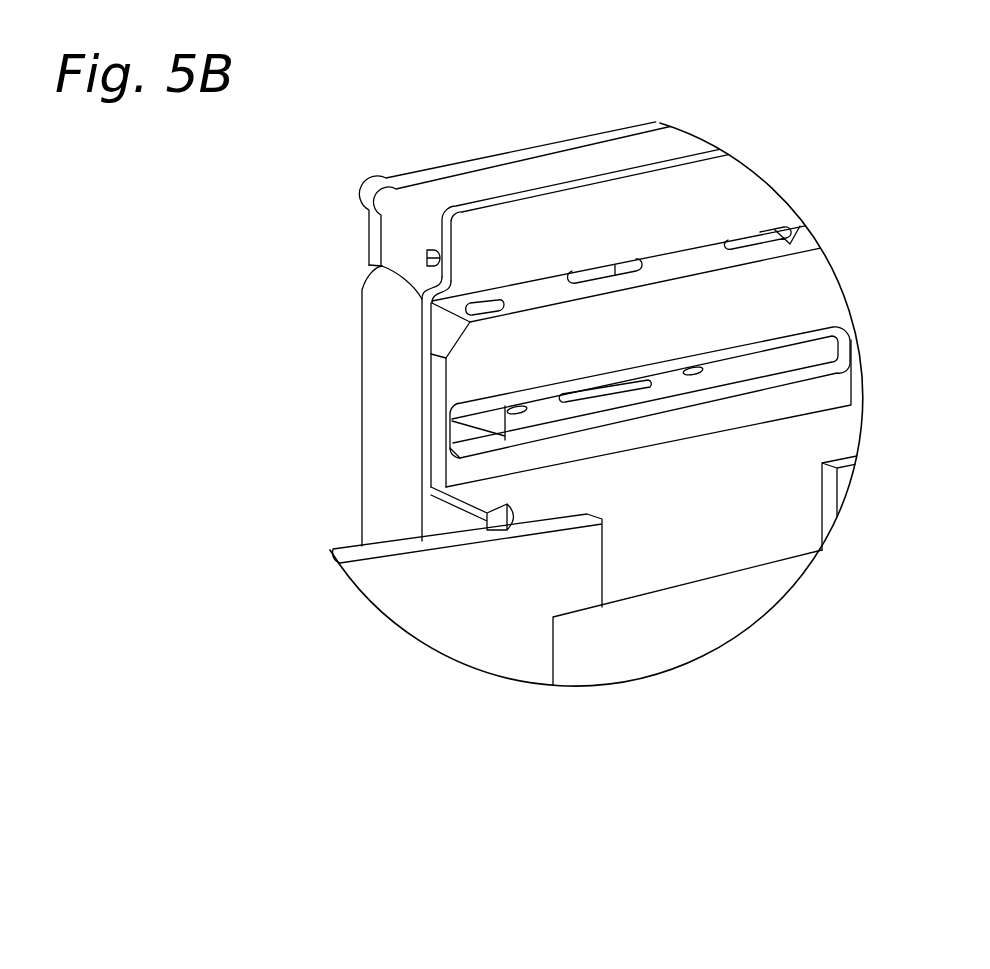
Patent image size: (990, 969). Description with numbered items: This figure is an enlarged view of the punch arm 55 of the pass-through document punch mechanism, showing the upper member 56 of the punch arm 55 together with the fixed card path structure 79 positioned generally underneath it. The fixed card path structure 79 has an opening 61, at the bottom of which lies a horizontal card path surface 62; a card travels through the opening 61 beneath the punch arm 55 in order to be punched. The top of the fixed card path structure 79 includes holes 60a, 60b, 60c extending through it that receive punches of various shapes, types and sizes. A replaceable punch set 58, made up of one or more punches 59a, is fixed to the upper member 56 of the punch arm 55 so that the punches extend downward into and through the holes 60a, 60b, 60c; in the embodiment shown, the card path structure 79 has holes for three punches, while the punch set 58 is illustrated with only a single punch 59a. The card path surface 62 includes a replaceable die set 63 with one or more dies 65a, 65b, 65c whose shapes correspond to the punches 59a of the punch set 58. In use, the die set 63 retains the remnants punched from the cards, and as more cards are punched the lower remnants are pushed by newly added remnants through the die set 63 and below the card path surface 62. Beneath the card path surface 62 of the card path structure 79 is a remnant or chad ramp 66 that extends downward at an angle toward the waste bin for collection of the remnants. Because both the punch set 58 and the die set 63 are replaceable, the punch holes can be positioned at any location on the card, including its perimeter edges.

The punch arm 55 is at (321, 404).
The upper member 56 is at (425, 250).
The replaceable punch set 58 is at (416, 249).
The punch 59a is at (427, 268).
The hole 60a is at (492, 305).
The hole 60b is at (640, 262).
The hole 60c is at (770, 243).
The opening 61 is at (788, 372).
The horizontal card path surface 62 is at (722, 392).
The replaceable die set 63 is at (471, 449).
The die 65a is at (507, 412).
The die 65b is at (605, 392).
The die 65c is at (691, 375).
The chad ramp 66 is at (597, 675).
The fixed card path structure 79 is at (823, 283).